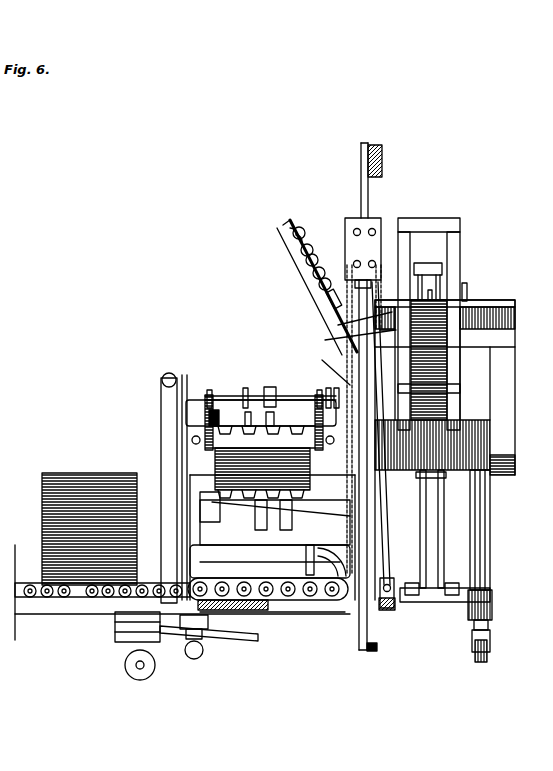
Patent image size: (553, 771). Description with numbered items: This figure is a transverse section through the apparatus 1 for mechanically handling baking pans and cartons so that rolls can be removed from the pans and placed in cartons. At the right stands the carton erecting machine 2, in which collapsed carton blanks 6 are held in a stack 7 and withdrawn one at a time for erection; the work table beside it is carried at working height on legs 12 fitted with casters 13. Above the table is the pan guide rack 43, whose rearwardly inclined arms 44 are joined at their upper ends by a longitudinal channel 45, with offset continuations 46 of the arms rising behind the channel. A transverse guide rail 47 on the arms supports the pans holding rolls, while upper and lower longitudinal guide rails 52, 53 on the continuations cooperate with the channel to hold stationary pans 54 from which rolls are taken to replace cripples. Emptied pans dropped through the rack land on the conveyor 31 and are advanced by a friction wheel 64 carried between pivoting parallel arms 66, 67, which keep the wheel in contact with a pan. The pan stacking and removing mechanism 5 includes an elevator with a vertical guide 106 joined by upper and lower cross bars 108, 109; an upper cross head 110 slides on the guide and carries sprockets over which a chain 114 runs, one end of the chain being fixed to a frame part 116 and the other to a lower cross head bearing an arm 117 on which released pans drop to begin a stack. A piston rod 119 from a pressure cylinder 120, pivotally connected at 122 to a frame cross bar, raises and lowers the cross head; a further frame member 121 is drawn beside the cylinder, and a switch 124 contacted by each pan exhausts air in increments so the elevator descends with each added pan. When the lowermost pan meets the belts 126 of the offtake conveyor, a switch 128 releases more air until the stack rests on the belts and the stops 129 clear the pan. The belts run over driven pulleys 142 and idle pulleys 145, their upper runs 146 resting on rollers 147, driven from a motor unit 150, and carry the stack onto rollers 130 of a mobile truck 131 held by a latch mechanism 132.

The apparatus 1 is at (498, 480).
The carton erecting machine 2 is at (460, 226).
The pan stacking and removing mechanism 5 is at (200, 395).
The collapsed carton blanks 6 is at (448, 325).
The stack of carton blanks 7 is at (448, 369).
The legs 12 is at (490, 595).
The casters 13 is at (490, 650).
The conveyor 31 is at (308, 400).
The pan guide rack 43 is at (325, 340).
The arms 44 is at (340, 361).
The longitudinal channel 45 is at (333, 306).
The offset continuations 46 is at (286, 236).
The guide rail 47 is at (370, 336).
The upper longitudinal guide rail 52 is at (292, 235).
The lower longitudinal guide rail 53 is at (316, 282).
The stationary pans 54 is at (305, 262).
The friction wheel 64 is at (264, 462).
The arm 66 is at (271, 387).
The arm 67 is at (246, 388).
The vertical guide 106 is at (366, 189).
The upper cross bar 108 is at (382, 172).
The lower cross bar 109 is at (380, 652).
The upper cross head 110 is at (374, 228).
The chain 114 is at (345, 276).
The fixed frame part 116 is at (380, 298).
The arm 117 is at (330, 500).
The piston rod 119 is at (338, 325).
The pressure cylinder 120 is at (386, 522).
The post 121 is at (398, 582).
The pivotal connection 122 is at (388, 610).
The switch 124 is at (210, 414).
The belts 126 is at (322, 600).
The electrical switch 128 is at (334, 553).
The stops 129 is at (275, 518).
The rollers 130 is at (32, 585).
The mobile truck 131 is at (78, 614).
The latch mechanism 132 is at (222, 634).
The driven pulleys 142 is at (210, 575).
The idle pulleys 145 is at (356, 606).
The upper runs 146 is at (268, 579).
The rollers 147 is at (285, 602).
The motor unit 150 is at (306, 555).